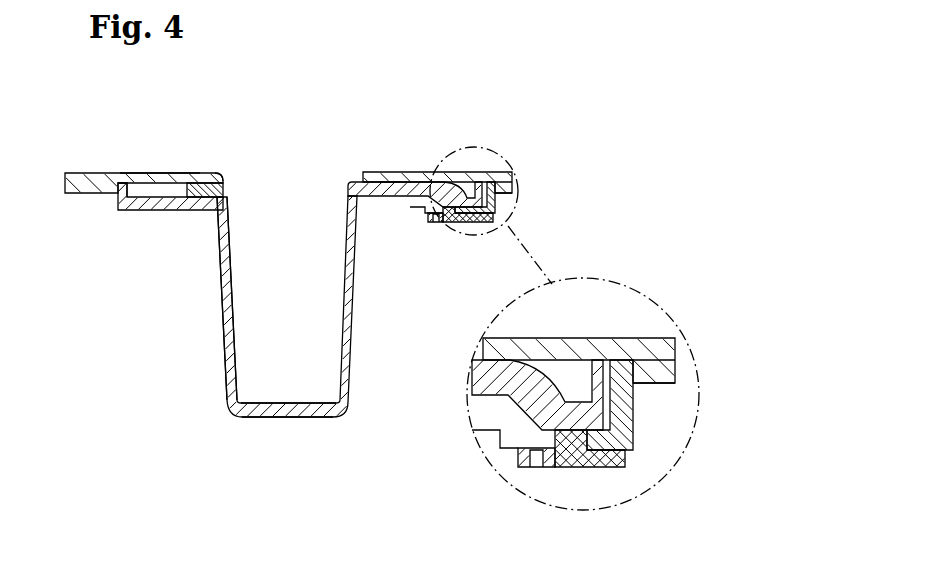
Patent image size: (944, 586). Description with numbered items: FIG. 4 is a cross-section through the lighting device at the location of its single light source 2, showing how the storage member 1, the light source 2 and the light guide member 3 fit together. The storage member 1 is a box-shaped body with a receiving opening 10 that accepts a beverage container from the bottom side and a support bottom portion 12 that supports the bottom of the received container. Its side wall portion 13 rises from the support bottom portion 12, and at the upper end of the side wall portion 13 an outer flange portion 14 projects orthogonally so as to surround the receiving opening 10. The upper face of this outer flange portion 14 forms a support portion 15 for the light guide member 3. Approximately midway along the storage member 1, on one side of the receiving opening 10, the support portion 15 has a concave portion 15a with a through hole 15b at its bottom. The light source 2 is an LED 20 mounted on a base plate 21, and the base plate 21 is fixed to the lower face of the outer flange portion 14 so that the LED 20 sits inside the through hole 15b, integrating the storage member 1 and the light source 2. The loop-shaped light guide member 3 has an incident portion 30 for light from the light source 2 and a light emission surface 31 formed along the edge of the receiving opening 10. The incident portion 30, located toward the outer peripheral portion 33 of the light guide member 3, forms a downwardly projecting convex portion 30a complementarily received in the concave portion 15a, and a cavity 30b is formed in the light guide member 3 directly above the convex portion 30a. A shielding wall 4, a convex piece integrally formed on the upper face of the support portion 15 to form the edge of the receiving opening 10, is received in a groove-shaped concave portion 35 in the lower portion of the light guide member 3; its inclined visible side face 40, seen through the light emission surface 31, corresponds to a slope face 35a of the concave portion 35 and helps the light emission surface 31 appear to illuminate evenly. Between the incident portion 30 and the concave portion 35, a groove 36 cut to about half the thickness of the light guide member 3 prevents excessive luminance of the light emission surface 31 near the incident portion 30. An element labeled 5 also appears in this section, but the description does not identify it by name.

The storage member 1 is at (352, 368).
The light source 2 is at (554, 386).
The LED 20 is at (462, 223).
The base plate 21 is at (470, 223).
The light guide member 3 is at (362, 196).
The shielding wall 4 is at (154, 244).
The visible side face 40 is at (212, 210).
The cover plate 5 is at (420, 172).
The receiving opening 10 is at (268, 200).
The support bottom portion 12 is at (292, 418).
The side wall portion 13 is at (218, 348).
The outer flange portion 14 is at (132, 211).
The support portion 15 is at (142, 212).
The concave portion 15a is at (514, 186).
The through hole 15b is at (514, 196).
The incident portion 30 is at (605, 261).
The convex portion 30a is at (443, 223).
The cavity 30b is at (472, 173).
The light emission surface 31 is at (223, 177).
The outer peripheral portion 33 is at (172, 174).
The concave portion 35 is at (267, 224).
The slope face 35a is at (348, 225).
The groove 36 is at (385, 172).